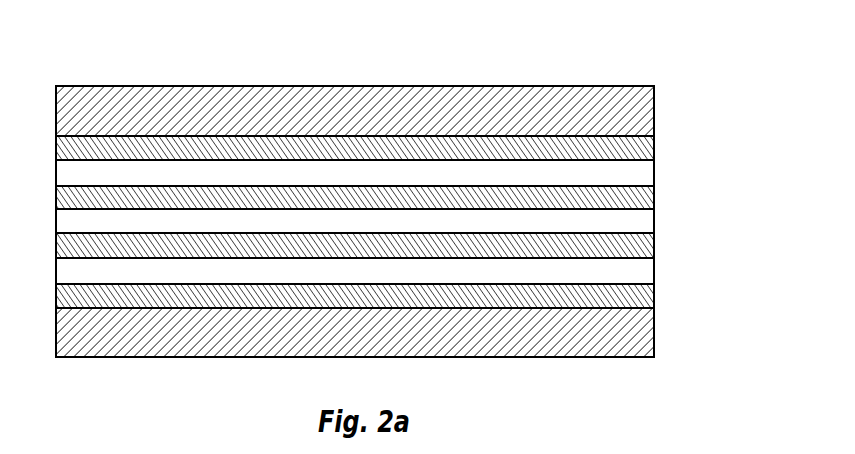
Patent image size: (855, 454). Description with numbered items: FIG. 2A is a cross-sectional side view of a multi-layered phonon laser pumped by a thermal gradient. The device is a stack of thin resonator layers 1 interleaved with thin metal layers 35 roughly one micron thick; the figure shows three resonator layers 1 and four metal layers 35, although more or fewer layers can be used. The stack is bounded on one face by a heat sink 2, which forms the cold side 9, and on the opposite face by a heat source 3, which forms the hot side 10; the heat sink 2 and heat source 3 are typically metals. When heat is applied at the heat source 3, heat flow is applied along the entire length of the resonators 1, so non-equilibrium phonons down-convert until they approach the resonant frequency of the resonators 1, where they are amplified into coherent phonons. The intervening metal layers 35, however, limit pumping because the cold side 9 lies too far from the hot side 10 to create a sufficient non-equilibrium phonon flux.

The heat sink 2 is at (592, 86).
The cold side 9 is at (150, 86).
The metal layers 35 is at (650, 193).
The resonator 1 is at (639, 223).
The hot side 10 is at (153, 357).
The heat source 3 is at (653, 335).